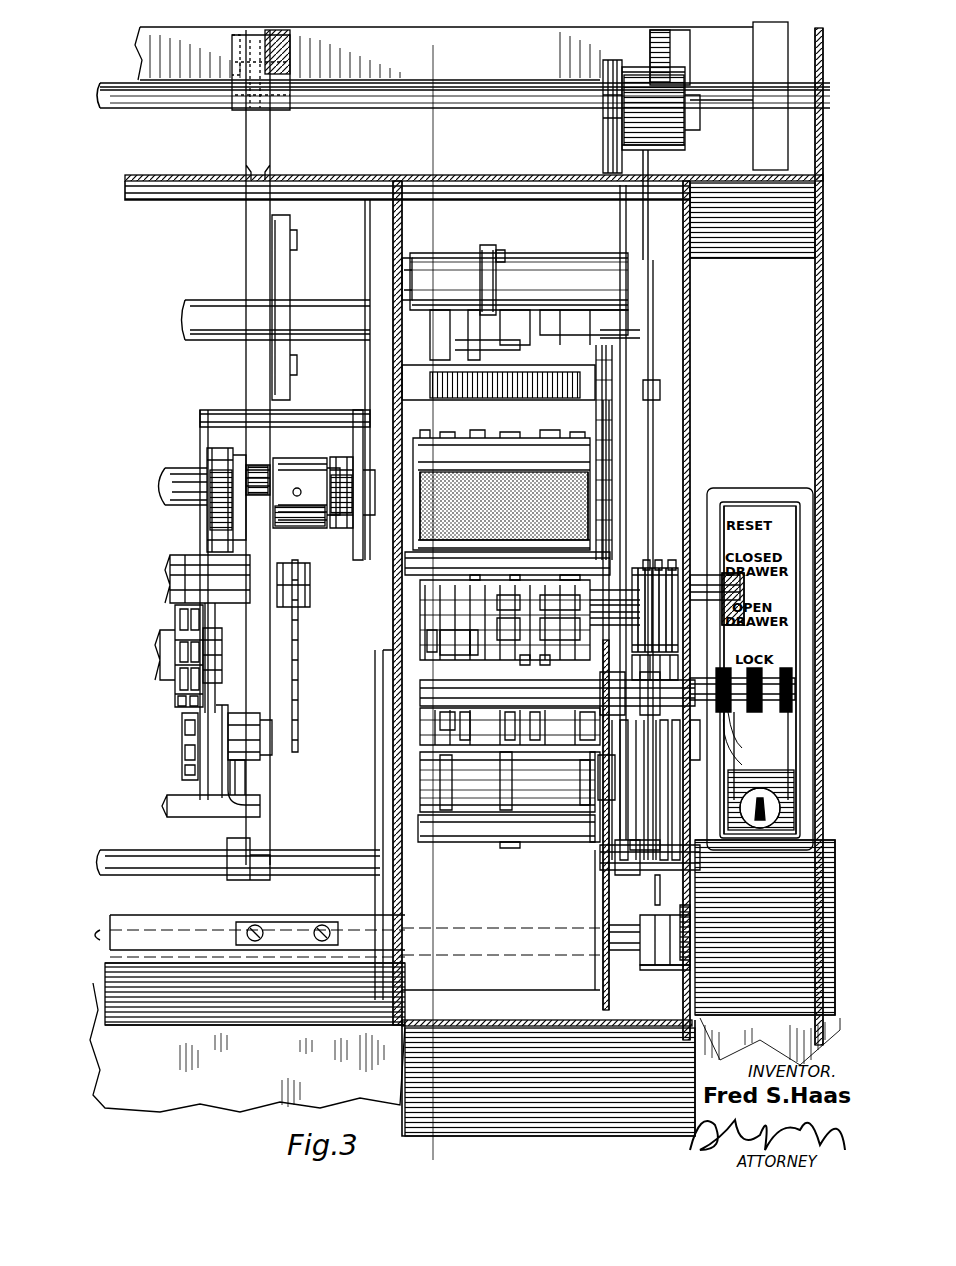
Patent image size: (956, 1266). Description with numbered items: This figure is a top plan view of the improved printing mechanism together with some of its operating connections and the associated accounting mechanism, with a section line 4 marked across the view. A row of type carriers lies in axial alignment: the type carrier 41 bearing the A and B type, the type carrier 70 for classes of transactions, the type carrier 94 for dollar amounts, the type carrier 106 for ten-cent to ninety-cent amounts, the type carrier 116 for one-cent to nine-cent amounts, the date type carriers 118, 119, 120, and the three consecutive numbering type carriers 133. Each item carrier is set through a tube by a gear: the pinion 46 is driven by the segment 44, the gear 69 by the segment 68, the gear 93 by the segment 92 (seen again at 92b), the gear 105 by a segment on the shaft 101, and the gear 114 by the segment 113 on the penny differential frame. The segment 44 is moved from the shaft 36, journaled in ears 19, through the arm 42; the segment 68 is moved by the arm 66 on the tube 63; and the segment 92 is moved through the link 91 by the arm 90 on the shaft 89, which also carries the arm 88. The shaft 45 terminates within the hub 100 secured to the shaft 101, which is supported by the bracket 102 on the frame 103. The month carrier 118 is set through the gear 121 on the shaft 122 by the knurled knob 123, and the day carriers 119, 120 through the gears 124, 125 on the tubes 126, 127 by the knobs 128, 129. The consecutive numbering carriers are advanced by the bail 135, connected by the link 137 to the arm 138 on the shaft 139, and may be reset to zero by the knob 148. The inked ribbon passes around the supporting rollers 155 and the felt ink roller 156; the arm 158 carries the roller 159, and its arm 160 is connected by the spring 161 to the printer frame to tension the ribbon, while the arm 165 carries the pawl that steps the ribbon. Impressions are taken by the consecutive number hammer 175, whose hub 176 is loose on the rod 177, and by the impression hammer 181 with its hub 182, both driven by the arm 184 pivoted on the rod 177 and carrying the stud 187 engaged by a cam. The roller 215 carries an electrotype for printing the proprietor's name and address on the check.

The section line 4- 4 is at (433, 50).
The shaft 89 is at (483, 100).
The arm 90 is at (650, 166).
The frame 103 is at (245, 270).
The hub 176 is at (519, 281).
The hub 182 is at (584, 308).
The rod 177 is at (410, 262).
The arm 184 is at (488, 245).
The stud 187 is at (503, 255).
The impression hammer 181 is at (518, 355).
The consecutive number hammer 175 is at (445, 350).
The link 91 is at (660, 392).
The segment 92 is at (654, 496).
The segment 92b is at (680, 810).
The roller 215 is at (501, 490).
The type carrier 118 is at (507, 563).
The type carrier 119 is at (490, 567).
The type carrier 120 is at (526, 567).
The type carrier 94 is at (566, 567).
The supporting rollers 155 is at (418, 568).
The type carriers 133 is at (462, 648).
The link 137 is at (470, 670).
The type carrier 41 is at (535, 663).
The type carrier 70 is at (556, 663).
The bail 135 is at (410, 625).
The type carrier 106 is at (600, 598).
The type carrier 116 is at (615, 604).
The gear 114 is at (640, 617).
The gear 105 is at (640, 565).
The gear 69 is at (658, 560).
The pinion 46 is at (680, 555).
The gear 93 is at (650, 560).
The knob 148 is at (745, 590).
The setting knob 128 is at (742, 666).
The tube 126 is at (727, 710).
The knurled knob 123 is at (755, 712).
The setting knob 129 is at (786, 712).
The tube 127 is at (557, 693).
The shaft 122 is at (439, 730).
The shaft 139 is at (478, 718).
The gear 124 is at (518, 730).
The gear 125 is at (556, 735).
The spring 161 is at (590, 742).
The roller 156 is at (490, 845).
The roller 159 is at (525, 845).
The arm 158 is at (598, 848).
The arm 138 is at (500, 752).
The gear 121 is at (510, 781).
The arm 165 is at (580, 785).
The arm 160 is at (596, 770).
The segment 113 is at (640, 800).
The segment 68 is at (668, 800).
The segment 44 is at (700, 740).
The arm 66 is at (655, 870).
The arm 42 is at (670, 875).
The shaft 36 is at (692, 920).
The tube 63 is at (630, 952).
The ears 19 is at (672, 968).
The shaft 45 is at (164, 484).
The hub 100 is at (306, 493).
The bracket 102 is at (353, 528).
The shaft 101 is at (360, 548).
The arm 88 is at (179, 656).